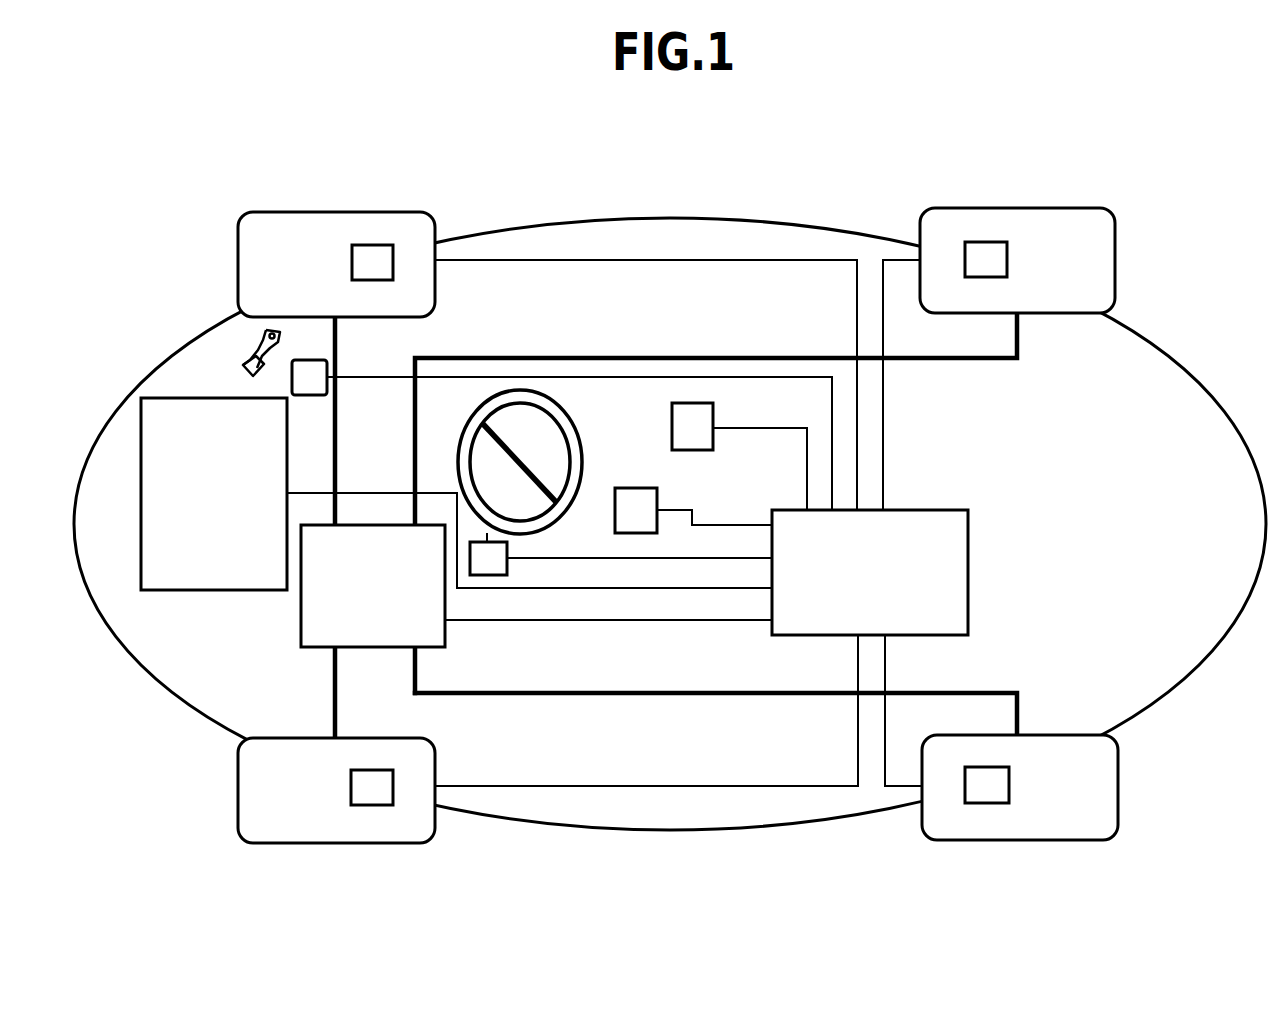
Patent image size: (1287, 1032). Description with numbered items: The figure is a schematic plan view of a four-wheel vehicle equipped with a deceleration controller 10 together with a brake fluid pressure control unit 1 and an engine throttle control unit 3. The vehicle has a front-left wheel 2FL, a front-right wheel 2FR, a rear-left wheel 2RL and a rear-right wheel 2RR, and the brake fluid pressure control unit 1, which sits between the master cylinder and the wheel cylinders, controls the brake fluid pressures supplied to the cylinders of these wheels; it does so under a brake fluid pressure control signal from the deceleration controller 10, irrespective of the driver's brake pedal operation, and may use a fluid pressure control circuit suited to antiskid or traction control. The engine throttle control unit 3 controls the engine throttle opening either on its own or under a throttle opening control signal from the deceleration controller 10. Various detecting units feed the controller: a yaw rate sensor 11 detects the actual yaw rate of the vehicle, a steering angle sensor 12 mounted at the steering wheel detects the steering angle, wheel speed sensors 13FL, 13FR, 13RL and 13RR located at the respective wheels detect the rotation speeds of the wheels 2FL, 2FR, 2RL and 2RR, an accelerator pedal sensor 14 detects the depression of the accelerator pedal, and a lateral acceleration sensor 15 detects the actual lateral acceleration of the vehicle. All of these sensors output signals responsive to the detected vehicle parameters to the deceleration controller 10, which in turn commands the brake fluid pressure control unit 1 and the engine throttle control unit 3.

The brake fluid pressure control unit 1 is at (301, 630).
The engine throttle control unit 3 is at (212, 590).
The deceleration controller 10 is at (968, 550).
The yaw rate sensor 11 is at (641, 488).
The steering angle sensor 12 is at (507, 551).
The accelerator pedal sensor 14 is at (305, 395).
The lateral acceleration sensor 15 is at (672, 426).
The front-right wheel 2FR is at (284, 212).
The front-left wheel 2FL is at (283, 843).
The rear-right wheel 2RR is at (1062, 208).
The rear-left wheel 2RL is at (1077, 840).
The wheel speed sensor 13FR is at (370, 245).
The wheel speed sensor 13FL is at (370, 805).
The wheel speed sensor 13RR is at (984, 242).
The wheel speed sensor 13RL is at (988, 803).